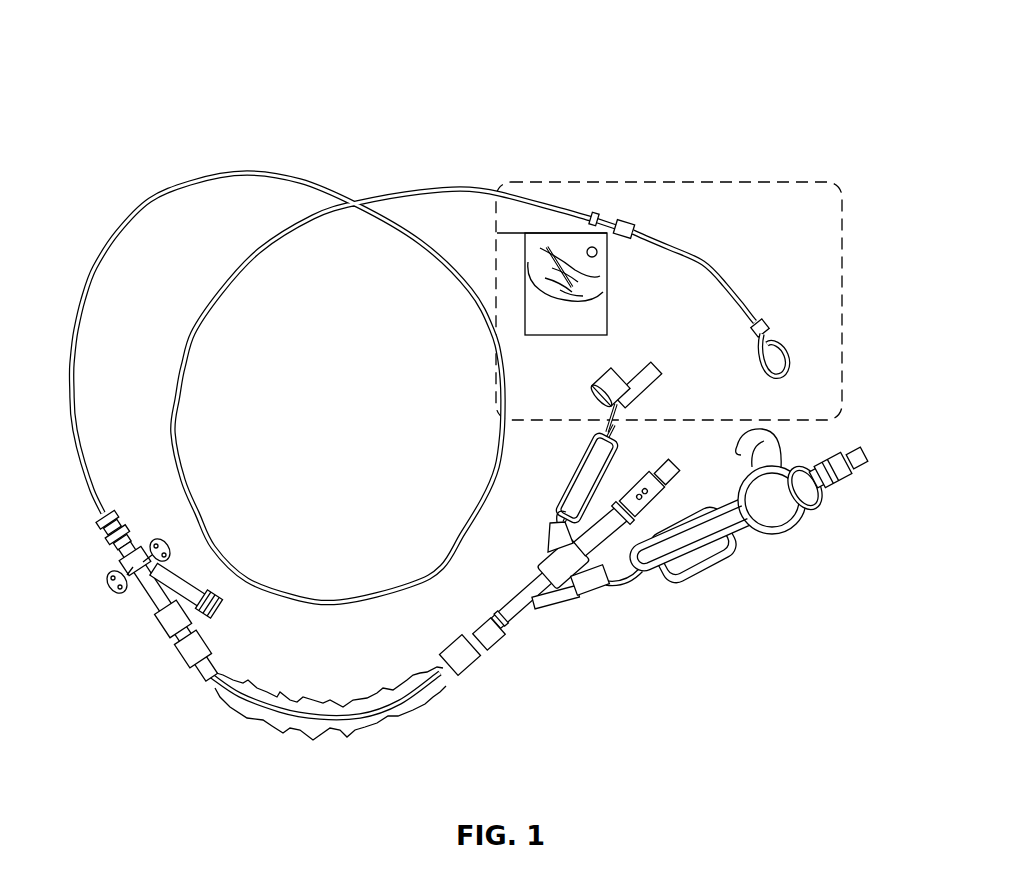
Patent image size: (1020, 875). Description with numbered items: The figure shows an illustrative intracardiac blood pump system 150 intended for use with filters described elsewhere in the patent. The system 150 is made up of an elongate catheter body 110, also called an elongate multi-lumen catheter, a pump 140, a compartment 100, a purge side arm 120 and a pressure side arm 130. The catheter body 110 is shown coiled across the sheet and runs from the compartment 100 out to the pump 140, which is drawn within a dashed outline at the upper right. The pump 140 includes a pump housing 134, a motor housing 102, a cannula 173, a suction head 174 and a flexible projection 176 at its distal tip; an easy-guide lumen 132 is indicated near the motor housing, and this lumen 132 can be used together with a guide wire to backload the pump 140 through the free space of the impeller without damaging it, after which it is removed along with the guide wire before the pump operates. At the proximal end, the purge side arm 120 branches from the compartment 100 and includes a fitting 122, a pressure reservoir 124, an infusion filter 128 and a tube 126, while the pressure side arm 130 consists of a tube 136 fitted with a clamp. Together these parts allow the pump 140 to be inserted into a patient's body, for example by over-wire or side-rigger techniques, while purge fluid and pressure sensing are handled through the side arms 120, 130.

The intracardiac blood pump system 150 is at (310, 88).
The compartment 100 is at (388, 580).
The motor housing 102 is at (608, 218).
The elongate catheter body 110 is at (128, 217).
The purge side arm 120 is at (788, 556).
The fitting 122 is at (863, 472).
The pressure reservoir 124 is at (785, 538).
The tube 126 is at (615, 600).
The infusion filter 128 is at (707, 590).
The pressure side arm 130 is at (552, 455).
The easy-guide lumen 132 is at (617, 246).
The pump housing 134 is at (630, 226).
The tube 136 is at (553, 517).
The pump 140 is at (690, 173).
The cannula 173 is at (705, 258).
The suction head 174 is at (763, 323).
The flexible projection 176 is at (782, 354).